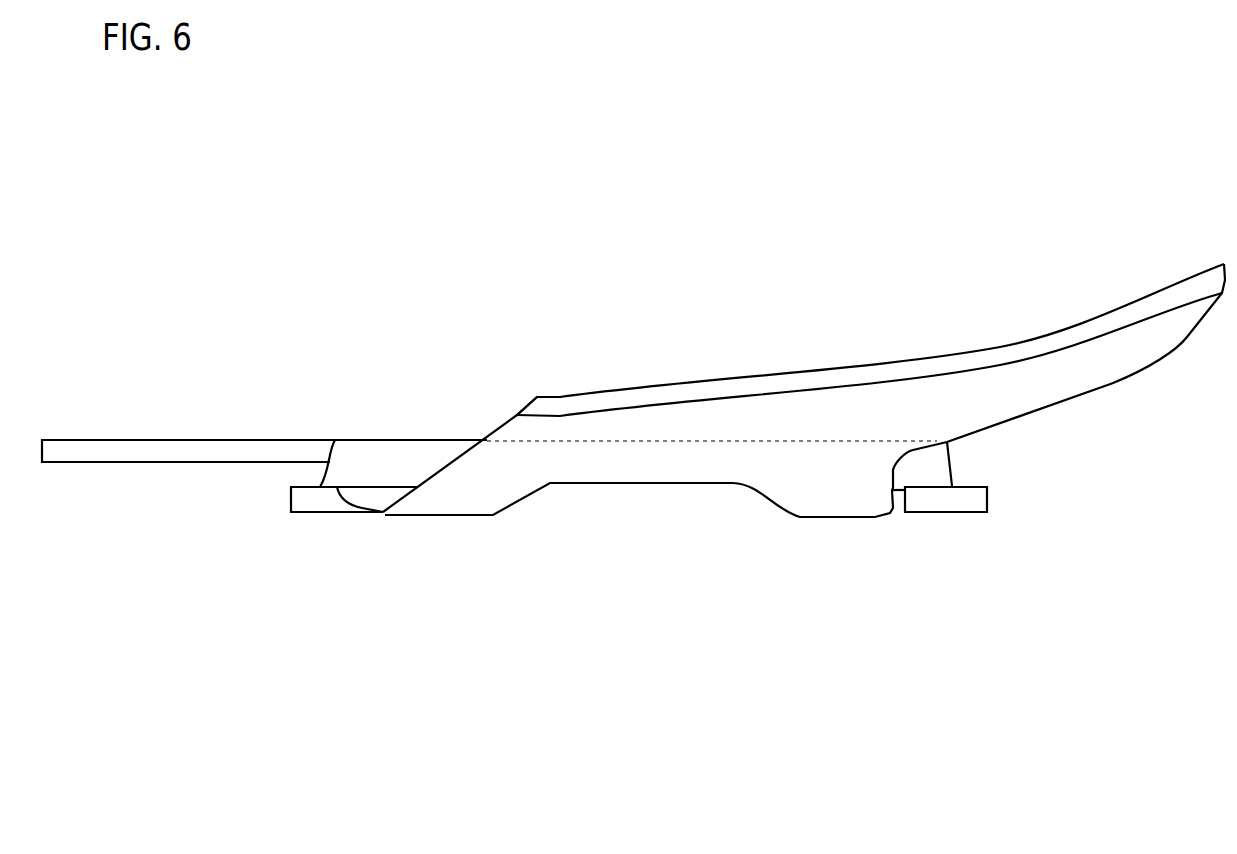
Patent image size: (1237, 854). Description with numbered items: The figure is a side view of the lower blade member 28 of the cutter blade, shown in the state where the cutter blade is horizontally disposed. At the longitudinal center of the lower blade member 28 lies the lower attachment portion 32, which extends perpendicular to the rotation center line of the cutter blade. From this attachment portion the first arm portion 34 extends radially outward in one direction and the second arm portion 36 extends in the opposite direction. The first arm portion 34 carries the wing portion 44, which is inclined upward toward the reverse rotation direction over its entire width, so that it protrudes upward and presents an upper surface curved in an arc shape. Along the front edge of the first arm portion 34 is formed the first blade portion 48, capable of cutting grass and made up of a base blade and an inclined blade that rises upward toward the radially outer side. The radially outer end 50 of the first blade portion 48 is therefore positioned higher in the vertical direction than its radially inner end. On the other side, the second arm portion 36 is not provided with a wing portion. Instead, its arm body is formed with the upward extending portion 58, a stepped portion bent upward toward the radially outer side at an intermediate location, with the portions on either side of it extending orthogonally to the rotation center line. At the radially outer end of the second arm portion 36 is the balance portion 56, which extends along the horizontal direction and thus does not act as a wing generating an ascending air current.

The lower blade member 28 is at (180, 118).
The lower attachment portion 32 is at (318, 497).
The first arm portion 34 is at (723, 373).
The second arm portion 36 is at (409, 433).
The wing portion 44 is at (837, 373).
The first blade portion 48 is at (462, 456).
The radially outer end of the first blade portion 50 is at (517, 413).
The balance portion 56 is at (111, 453).
The upward extending portion 58 is at (348, 447).